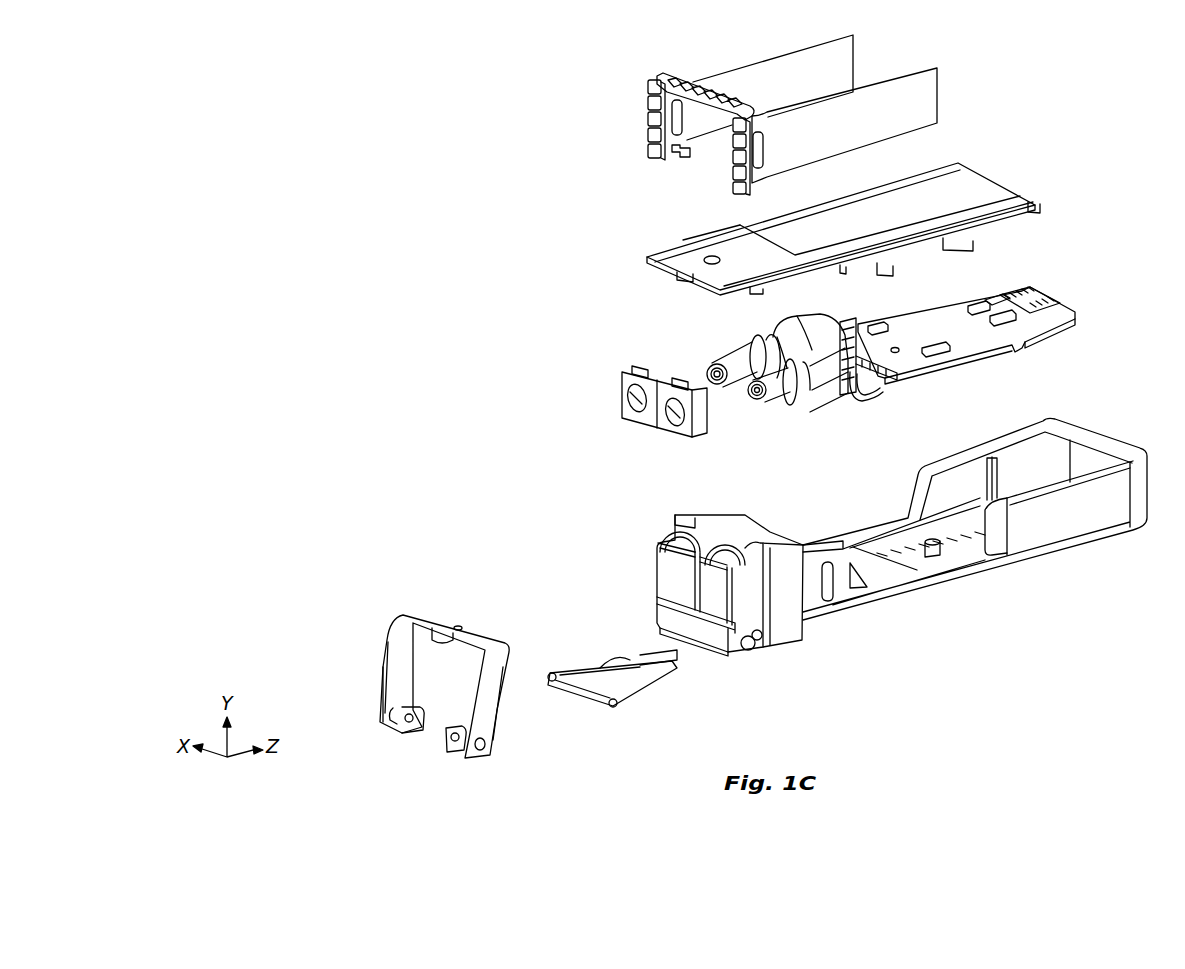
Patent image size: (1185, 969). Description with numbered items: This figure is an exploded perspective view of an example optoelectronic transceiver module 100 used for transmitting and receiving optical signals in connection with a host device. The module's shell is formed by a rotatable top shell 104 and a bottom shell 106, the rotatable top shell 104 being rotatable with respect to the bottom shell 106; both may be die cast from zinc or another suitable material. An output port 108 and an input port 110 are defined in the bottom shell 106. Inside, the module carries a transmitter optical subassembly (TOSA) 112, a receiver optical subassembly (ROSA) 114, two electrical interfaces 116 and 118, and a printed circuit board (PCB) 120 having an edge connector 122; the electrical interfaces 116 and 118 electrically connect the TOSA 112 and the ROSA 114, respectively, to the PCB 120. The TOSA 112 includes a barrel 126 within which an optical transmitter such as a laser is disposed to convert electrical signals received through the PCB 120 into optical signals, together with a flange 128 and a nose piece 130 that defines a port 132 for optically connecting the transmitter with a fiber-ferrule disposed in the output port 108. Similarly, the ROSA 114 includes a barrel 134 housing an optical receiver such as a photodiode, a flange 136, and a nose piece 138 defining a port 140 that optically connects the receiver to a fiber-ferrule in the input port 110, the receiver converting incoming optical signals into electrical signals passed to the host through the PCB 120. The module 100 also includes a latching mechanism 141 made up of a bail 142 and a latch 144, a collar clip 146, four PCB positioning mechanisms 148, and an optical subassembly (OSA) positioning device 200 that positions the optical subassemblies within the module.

The optoelectronic transceiver module 100 is at (1072, 84).
The rotatable top shell 104 is at (1000, 168).
The bottom shell 106 is at (1095, 522).
The output port 108 is at (672, 572).
The input port 110 is at (708, 588).
The transmitter optical subassembly (TOSA) 112 is at (770, 322).
The receiver optical subassembly (ROSA) 114 is at (858, 420).
The electrical interface 116 is at (843, 315).
The electrical interface 118 is at (888, 391).
The printed circuit board (PCB) 120 is at (992, 298).
The edge connector 122 is at (1022, 285).
The barrel 126 is at (788, 335).
The flange 128 is at (733, 351).
The nose piece 130 is at (728, 365).
The port 132 is at (697, 366).
The barrel 134 is at (824, 403).
The flange 136 is at (783, 398).
The nose piece 138 is at (768, 398).
The port 140 is at (740, 401).
The latching mechanism 141 is at (377, 755).
The bail 142 is at (410, 618).
The latch 144 is at (565, 668).
The collar clip 146 is at (688, 55).
The PCB positioning mechanism 148 is at (980, 325).
The optical subassembly (OSA) positioning device 200 is at (602, 385).